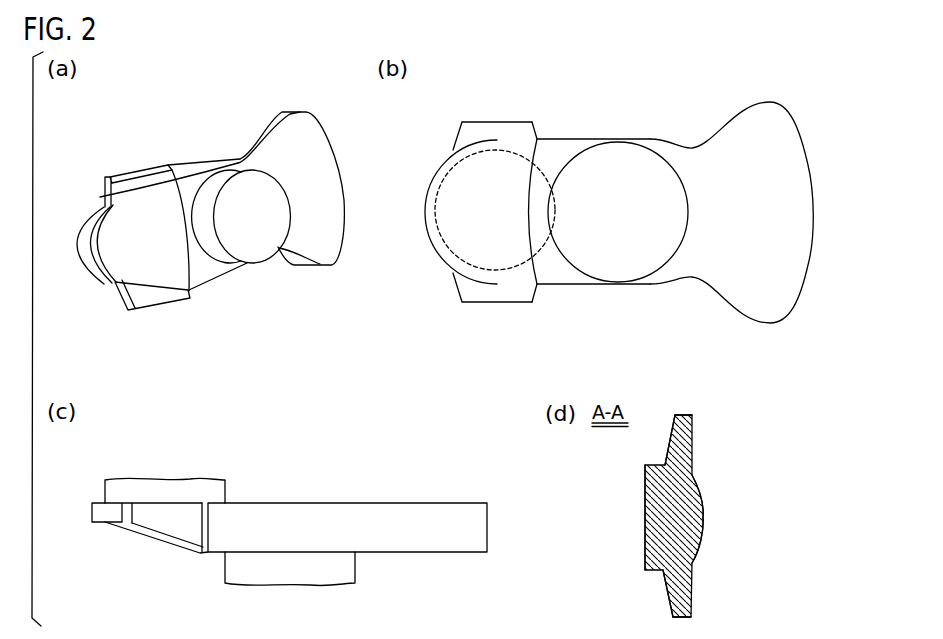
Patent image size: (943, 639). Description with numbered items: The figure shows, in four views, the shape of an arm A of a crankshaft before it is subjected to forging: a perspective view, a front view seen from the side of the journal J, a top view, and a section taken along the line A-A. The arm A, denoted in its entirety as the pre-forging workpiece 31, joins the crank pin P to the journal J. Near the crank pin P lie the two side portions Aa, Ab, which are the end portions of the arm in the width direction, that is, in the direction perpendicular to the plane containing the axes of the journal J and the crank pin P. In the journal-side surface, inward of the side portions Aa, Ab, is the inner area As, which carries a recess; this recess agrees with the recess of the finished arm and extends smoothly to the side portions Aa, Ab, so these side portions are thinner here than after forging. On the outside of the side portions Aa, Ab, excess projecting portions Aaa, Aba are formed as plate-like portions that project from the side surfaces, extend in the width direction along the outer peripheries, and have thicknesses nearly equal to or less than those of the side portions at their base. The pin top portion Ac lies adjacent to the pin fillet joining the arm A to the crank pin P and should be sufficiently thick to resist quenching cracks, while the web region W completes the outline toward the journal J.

The spring seat 31 is at (233, 112).
The arm A is at (187, 168).
The side portion Aa is at (135, 190).
The excess projecting portion Aaa is at (142, 197).
The side portion Ab is at (157, 281).
The excess projecting portion Aba is at (169, 300).
The pin top portion Ac is at (140, 238).
The inner area As is at (100, 277).
The crank pin P is at (90, 217).
The journal J is at (253, 250).
The flange portion W is at (280, 123).